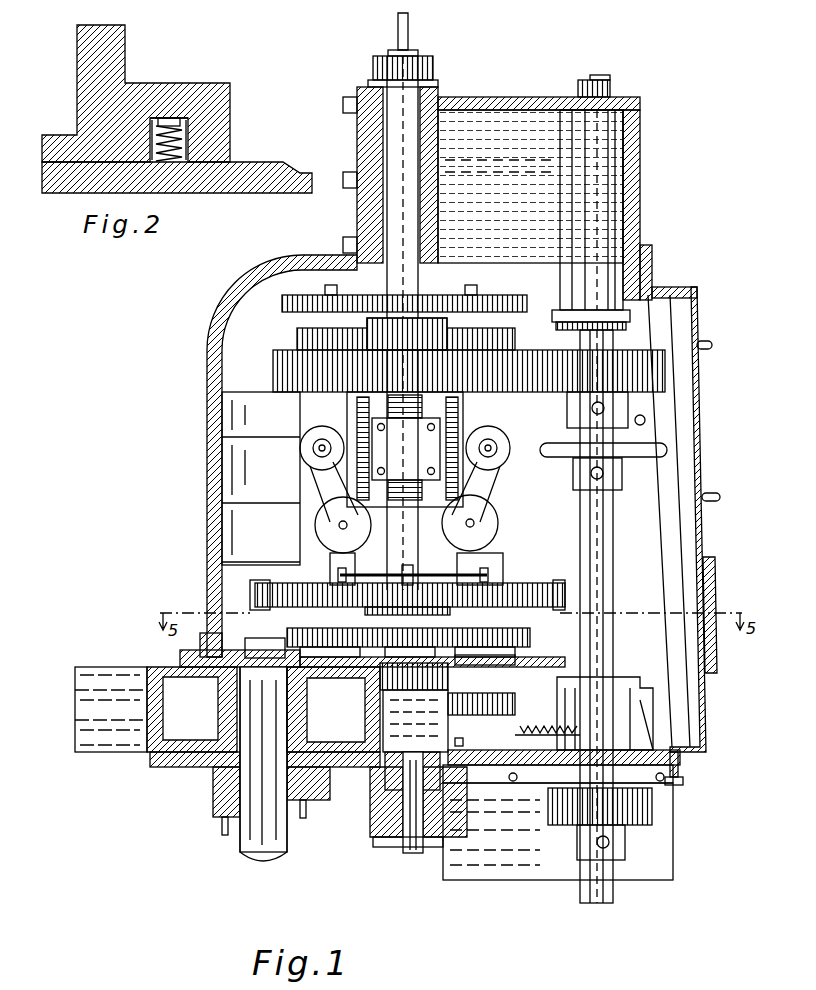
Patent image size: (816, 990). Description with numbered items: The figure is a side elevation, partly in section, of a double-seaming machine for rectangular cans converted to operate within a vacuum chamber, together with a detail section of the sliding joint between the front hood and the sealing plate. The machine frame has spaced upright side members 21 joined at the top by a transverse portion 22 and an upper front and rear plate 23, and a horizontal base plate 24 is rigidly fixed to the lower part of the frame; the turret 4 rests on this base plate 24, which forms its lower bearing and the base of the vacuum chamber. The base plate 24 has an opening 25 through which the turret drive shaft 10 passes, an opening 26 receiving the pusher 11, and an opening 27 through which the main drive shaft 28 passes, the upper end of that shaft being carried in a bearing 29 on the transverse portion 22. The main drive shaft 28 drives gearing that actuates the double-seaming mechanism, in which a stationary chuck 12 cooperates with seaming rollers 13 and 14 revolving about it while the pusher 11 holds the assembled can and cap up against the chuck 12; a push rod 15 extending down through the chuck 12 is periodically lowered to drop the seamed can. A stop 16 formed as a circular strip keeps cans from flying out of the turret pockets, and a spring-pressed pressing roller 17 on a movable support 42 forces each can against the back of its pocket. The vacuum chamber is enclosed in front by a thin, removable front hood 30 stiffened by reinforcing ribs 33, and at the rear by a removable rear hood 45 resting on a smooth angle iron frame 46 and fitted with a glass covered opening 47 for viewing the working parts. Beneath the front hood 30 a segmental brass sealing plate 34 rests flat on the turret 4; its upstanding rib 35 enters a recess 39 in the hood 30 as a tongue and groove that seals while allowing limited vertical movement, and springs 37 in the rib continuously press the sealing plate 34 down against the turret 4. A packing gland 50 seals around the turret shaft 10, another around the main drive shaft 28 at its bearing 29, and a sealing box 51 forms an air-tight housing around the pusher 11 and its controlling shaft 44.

In FIG. 1, the turret 4 is at (98, 668).
In FIG. 1, the turret drive shaft 10 is at (250, 840).
In FIG. 1, the pusher 11 is at (400, 742).
In FIG. 1, the chuck 12 is at (448, 672).
In FIG. 1, the seaming roller 13 is at (343, 646).
In FIG. 1, the seaming roller 14 is at (500, 662).
In FIG. 1, the push rod 15 is at (410, 36).
In FIG. 1, the stop 16 is at (470, 744).
In FIG. 1, the pressing roller 17 is at (516, 706).
In FIG. 1, the upright side member 21 is at (494, 228).
In FIG. 1, the transverse portion 22 is at (514, 97).
In FIG. 1, the upper front and rear plate 23 is at (640, 156).
In FIG. 1, the base plate 24 is at (175, 766).
In FIG. 1, the opening 25 is at (228, 770).
In FIG. 1, the opening 26 is at (388, 796).
In FIG. 1, the opening 27 is at (560, 780).
In FIG. 1, the main drive shaft 28 is at (612, 83).
In FIG. 1, the bearing 29 is at (600, 226).
In FIG. 2, the front hood 30 is at (92, 90).
In FIG. 1, the front hood 30 is at (212, 420).
In FIG. 1, the reinforcing ribs 33 is at (222, 478).
In FIG. 2, the sealing plate 34 is at (245, 185).
In FIG. 1, the sealing plate 34 is at (165, 658).
In FIG. 2, the rib 35 is at (190, 142).
In FIG. 2, the springs 37 is at (170, 118).
In FIG. 2, the recess 39 is at (190, 122).
In FIG. 1, the recess 39 is at (265, 645).
In FIG. 1, the movable support 42 is at (519, 733).
In FIG. 1, the controlling shaft 44 is at (410, 860).
In FIG. 1, the rear hood 45 is at (700, 326).
In FIG. 1, the angle iron frame 46 is at (668, 300).
In FIG. 1, the glass covered opening 47 is at (712, 602).
In FIG. 1, the packing gland 50 is at (436, 82).
In FIG. 1, the sealing box 51 is at (372, 842).